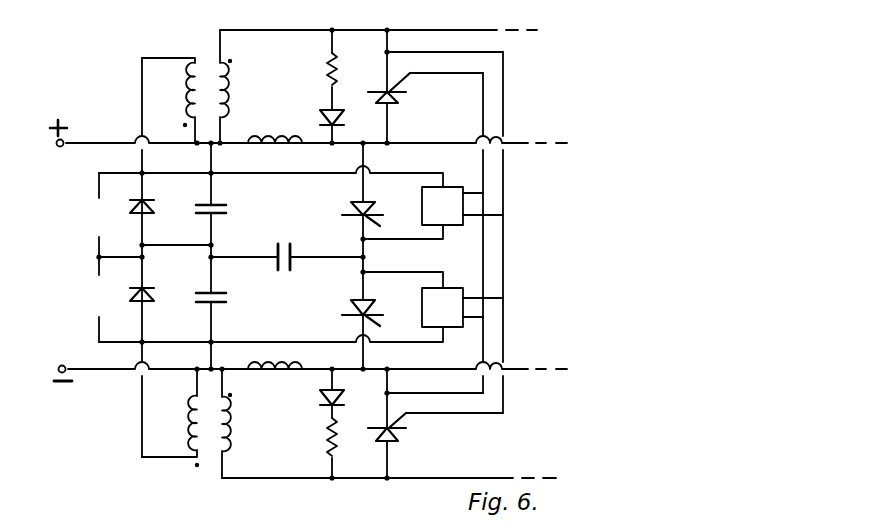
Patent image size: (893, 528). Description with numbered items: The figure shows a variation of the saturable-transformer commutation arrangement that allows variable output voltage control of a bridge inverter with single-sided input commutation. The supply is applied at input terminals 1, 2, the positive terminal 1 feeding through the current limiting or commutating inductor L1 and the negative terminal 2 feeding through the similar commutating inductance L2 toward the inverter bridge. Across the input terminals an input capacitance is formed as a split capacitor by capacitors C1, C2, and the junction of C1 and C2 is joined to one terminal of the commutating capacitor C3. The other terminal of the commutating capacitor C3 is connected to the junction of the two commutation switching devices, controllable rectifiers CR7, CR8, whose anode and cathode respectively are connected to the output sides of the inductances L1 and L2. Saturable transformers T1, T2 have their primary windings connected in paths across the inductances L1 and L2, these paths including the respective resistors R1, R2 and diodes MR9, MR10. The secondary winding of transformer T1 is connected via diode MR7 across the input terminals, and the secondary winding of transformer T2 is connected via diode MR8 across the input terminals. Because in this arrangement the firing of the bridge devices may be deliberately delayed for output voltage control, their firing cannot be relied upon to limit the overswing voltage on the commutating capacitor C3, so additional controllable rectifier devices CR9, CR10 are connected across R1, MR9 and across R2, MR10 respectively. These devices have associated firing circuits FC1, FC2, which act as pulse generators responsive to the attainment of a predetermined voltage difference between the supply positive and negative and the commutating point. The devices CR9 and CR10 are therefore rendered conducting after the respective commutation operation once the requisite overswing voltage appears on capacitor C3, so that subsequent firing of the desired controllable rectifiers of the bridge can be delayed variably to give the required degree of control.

The input terminal 1 is at (62, 150).
The input terminal 2 is at (60, 361).
The saturable transformer T1 is at (185, 86).
The saturable transformer T2 is at (186, 437).
The commutating inductor L1 is at (275, 131).
The commutating inductance L2 is at (275, 359).
The resistor R1 is at (324, 77).
The resistor R2 is at (319, 446).
The diode MR7 is at (176, 191).
The diode MR8 is at (177, 281).
The diode MR9 is at (325, 120).
The diode MR10 is at (307, 402).
The capacitor C1 is at (234, 212).
The capacitor C2 is at (232, 308).
The commutating capacitor C3 is at (301, 230).
The controllable rectifier CR7 is at (342, 211).
The controllable rectifier CR8 is at (344, 318).
The controllable rectifier device CR9 is at (403, 102).
The controllable rectifier device CR10 is at (401, 436).
The firing circuit FC1 is at (463, 231).
The firing circuit FC2 is at (460, 291).